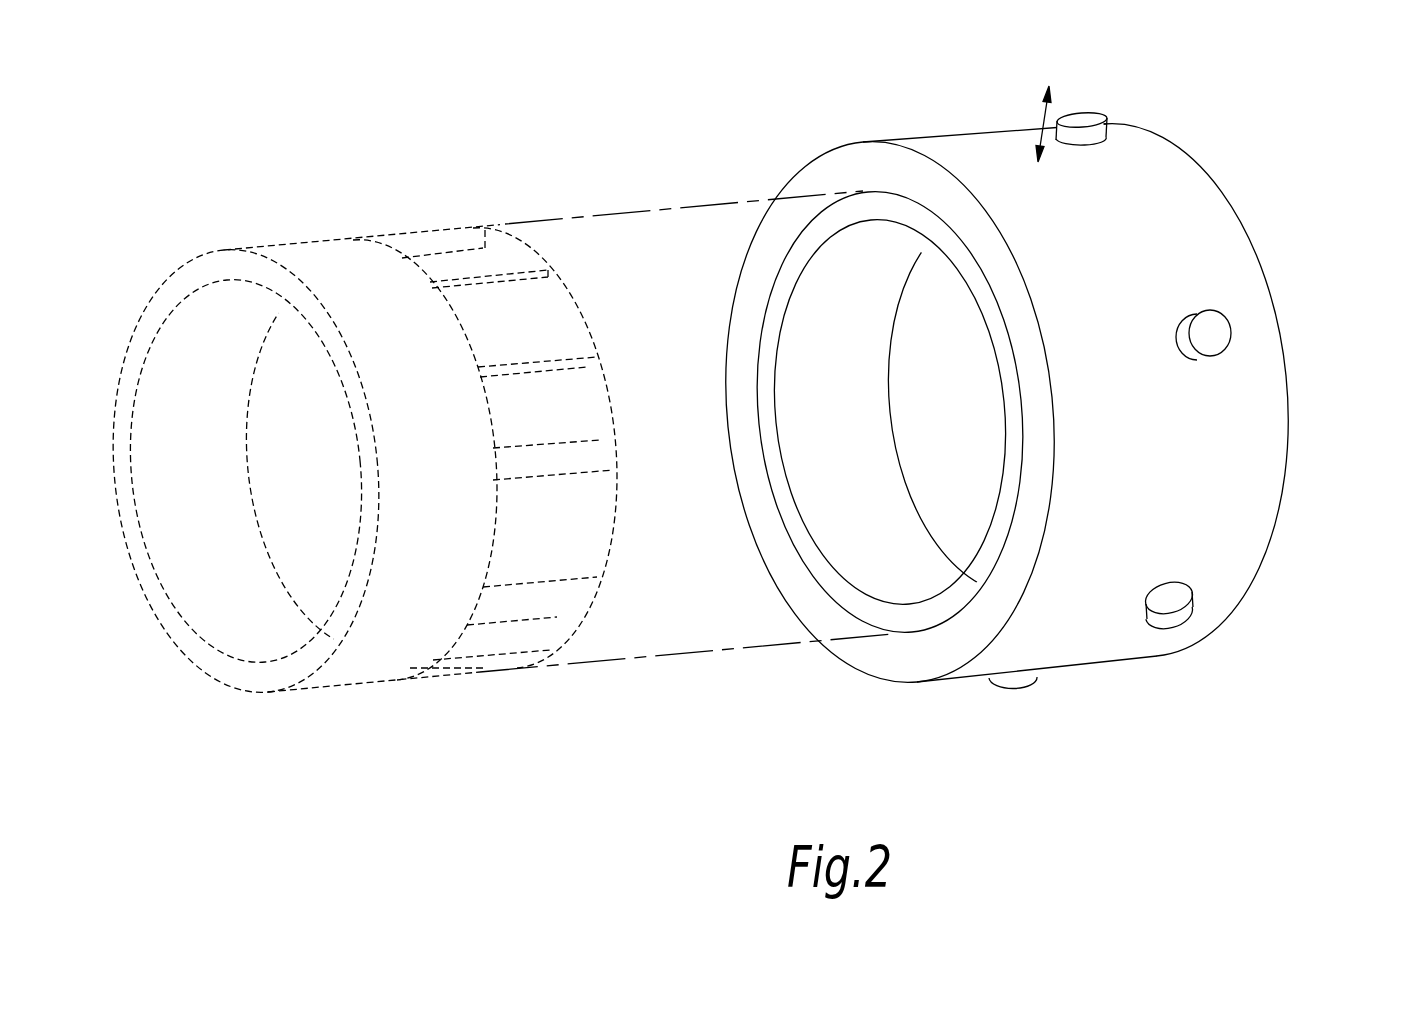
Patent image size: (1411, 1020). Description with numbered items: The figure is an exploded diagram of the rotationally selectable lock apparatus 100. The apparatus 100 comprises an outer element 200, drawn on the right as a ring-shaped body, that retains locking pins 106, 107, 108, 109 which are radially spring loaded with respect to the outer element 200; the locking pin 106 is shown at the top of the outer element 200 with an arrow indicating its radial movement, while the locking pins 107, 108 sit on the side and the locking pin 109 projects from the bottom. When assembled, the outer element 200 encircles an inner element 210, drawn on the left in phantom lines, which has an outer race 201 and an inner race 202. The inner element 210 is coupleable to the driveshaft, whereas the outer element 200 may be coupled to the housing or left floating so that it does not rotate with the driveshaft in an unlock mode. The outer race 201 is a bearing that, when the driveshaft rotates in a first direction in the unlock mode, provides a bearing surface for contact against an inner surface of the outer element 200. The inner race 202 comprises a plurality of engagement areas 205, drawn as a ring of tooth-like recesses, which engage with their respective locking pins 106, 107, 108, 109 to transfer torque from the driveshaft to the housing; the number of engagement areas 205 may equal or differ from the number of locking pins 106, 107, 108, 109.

The rotationally selectable lock apparatus 100 is at (1045, 457).
The locking pin 106 is at (1081, 112).
The locking pin 107 is at (1218, 333).
The locking pin 108 is at (1177, 613).
The locking pin 109 is at (1017, 685).
The outer element 200 is at (1270, 440).
The outer race 201 is at (297, 263).
The inner race 202 is at (422, 237).
The engagement area 205 is at (542, 322).
The inner element 210 is at (493, 485).